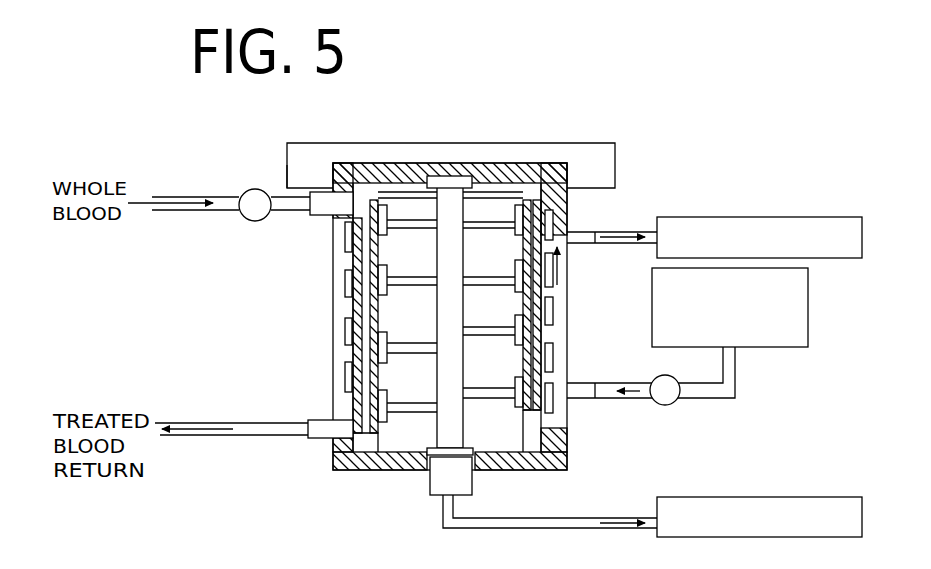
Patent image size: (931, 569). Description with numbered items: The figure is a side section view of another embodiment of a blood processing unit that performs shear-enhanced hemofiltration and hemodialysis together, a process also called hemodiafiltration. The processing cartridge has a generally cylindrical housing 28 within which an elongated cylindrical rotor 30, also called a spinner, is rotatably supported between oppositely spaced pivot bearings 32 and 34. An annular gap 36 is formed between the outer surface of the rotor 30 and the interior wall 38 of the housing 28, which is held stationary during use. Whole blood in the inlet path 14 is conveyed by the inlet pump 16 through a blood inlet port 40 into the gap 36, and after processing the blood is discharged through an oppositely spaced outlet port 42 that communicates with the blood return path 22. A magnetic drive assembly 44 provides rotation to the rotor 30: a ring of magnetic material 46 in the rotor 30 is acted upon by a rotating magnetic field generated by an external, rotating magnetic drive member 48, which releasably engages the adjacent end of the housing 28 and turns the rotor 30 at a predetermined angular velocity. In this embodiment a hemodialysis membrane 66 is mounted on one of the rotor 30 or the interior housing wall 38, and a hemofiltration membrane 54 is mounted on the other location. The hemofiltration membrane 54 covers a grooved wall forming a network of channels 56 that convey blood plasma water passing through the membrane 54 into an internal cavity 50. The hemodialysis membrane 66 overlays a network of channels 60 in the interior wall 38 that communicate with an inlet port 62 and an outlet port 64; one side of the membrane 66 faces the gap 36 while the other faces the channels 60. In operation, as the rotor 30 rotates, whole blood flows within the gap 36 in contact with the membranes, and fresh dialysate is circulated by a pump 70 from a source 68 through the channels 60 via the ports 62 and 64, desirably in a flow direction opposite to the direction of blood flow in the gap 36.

The inlet path 14 is at (298, 207).
The inlet pump 16 is at (250, 200).
The blood return path 22 is at (243, 428).
The housing 28 is at (558, 177).
The rotor 30 is at (504, 411).
The pivot bearing 32 is at (460, 171).
The pivot bearing 34 is at (477, 459).
The annular gap 36 is at (526, 347).
The interior wall 38 is at (552, 201).
The blood inlet port 40 is at (335, 204).
The outlet port 42 is at (328, 431).
The magnetic drive assembly 44 is at (335, 150).
The ring of magnetic material 46 is at (503, 191).
The magnetic drive member 48 is at (305, 152).
The internal cavity 50 is at (450, 371).
The hemofiltration membrane 54 is at (369, 283).
The network of channels 56 is at (408, 409).
The network of channels 60 is at (341, 262).
The inlet port 62 is at (580, 395).
The outlet port 64 is at (587, 245).
The hemodialysis membrane 66 is at (378, 320).
The source 68 is at (791, 334).
The pump 70 is at (667, 407).